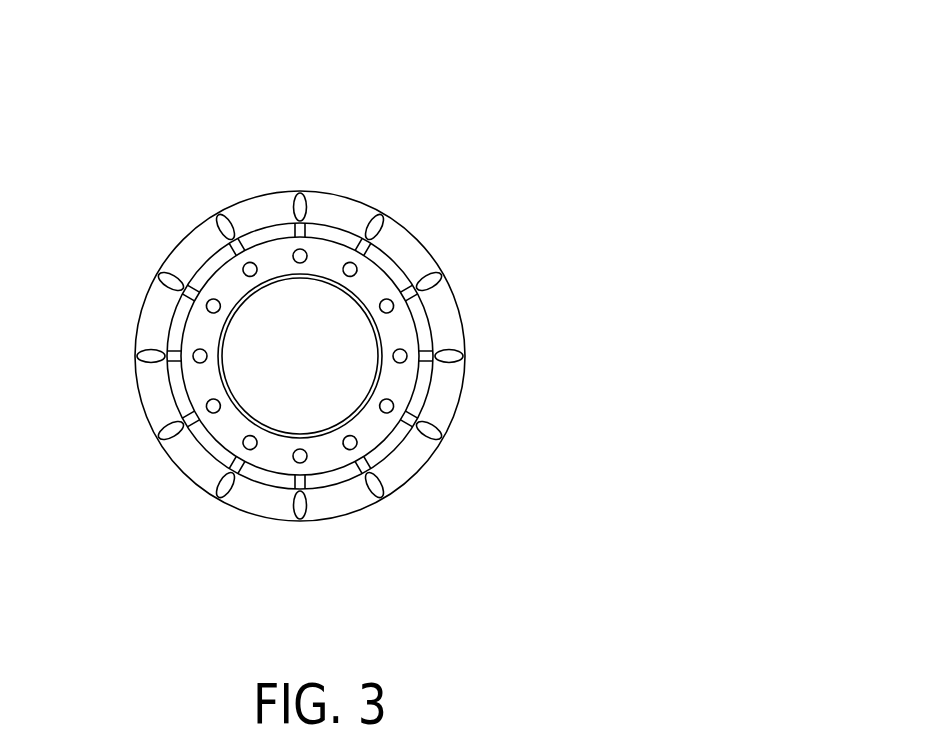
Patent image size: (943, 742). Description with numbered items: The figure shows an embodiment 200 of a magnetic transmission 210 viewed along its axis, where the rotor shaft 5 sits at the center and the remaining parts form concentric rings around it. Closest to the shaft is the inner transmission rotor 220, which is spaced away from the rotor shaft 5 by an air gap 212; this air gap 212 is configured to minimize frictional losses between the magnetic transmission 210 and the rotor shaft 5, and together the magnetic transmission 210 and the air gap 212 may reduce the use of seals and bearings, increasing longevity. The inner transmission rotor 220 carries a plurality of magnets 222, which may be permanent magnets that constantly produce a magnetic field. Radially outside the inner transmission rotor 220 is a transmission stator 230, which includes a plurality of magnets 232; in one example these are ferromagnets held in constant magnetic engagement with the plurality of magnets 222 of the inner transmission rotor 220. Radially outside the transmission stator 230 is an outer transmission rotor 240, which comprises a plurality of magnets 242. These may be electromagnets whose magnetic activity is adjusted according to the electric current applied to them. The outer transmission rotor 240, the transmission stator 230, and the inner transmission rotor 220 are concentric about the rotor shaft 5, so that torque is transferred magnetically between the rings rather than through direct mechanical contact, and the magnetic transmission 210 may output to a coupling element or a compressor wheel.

The embodiment of a magnetic transmission 200 is at (543, 40).
The magnetic transmission 210 is at (100, 182).
The air gap 212 is at (218, 378).
The inner transmission rotor 220 is at (413, 333).
The plurality of magnets 222 is at (245, 447).
The transmission stator 230 is at (392, 260).
The plurality of magnets 232 is at (370, 458).
The outer transmission rotor 240 is at (383, 215).
The plurality of magnets 242 is at (442, 427).
The rotor shaft 5 is at (308, 374).